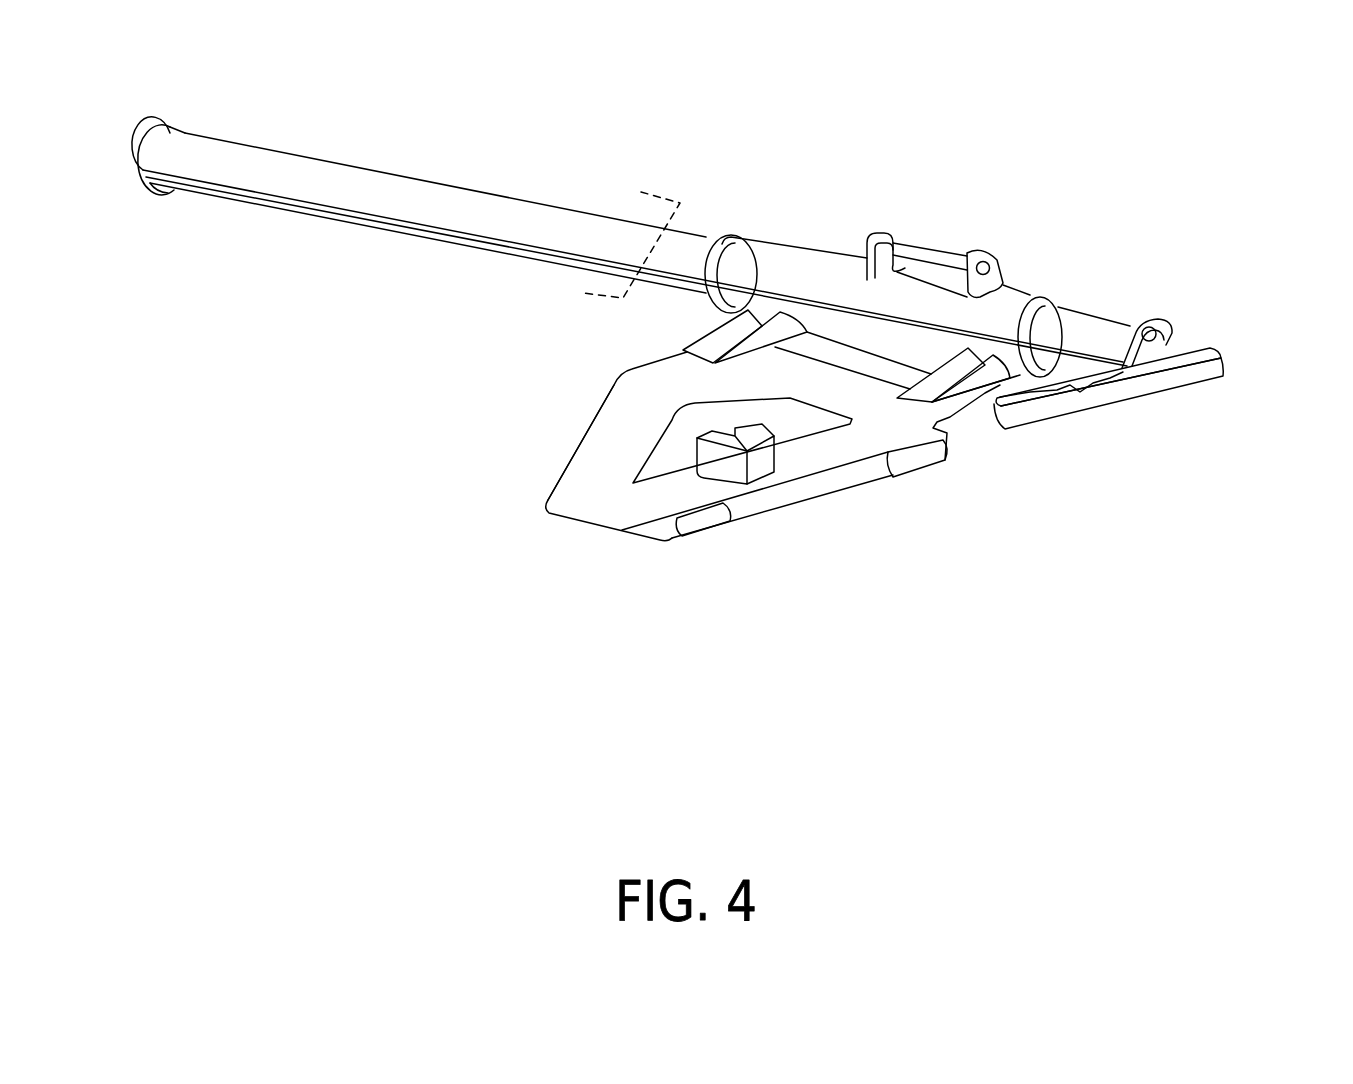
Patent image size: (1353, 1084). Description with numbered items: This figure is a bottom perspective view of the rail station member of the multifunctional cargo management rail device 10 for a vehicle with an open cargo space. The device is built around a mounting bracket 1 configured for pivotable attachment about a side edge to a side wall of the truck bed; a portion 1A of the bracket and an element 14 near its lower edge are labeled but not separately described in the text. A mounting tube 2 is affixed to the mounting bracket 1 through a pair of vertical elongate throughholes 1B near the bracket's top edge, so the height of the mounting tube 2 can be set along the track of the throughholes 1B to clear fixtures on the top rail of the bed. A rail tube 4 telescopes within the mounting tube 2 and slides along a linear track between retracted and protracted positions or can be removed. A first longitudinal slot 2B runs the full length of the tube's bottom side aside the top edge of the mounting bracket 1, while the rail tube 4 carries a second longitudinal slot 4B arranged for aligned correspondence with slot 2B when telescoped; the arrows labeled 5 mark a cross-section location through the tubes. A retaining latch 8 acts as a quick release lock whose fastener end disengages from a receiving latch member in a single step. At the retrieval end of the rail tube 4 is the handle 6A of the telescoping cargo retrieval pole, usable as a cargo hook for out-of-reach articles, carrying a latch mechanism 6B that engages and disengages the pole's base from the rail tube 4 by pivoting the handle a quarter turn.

The mounting bracket 1 is at (795, 392).
The base plate portion 1A is at (617, 530).
The vertical elongate throughholes 1B is at (963, 363).
The mounting tube 2 is at (1018, 303).
The first longitudinal slot 2B is at (720, 300).
The rail tube 4 is at (428, 193).
The second longitudinal slot 4B is at (683, 290).
The section line 5 is at (599, 233).
The handle 6A is at (1167, 378).
The latch mechanism 6B is at (1147, 326).
The retaining latch 8 is at (727, 463).
The multifunctional cargo management rail device 10 is at (985, 161).
The hinge 14 is at (973, 462).